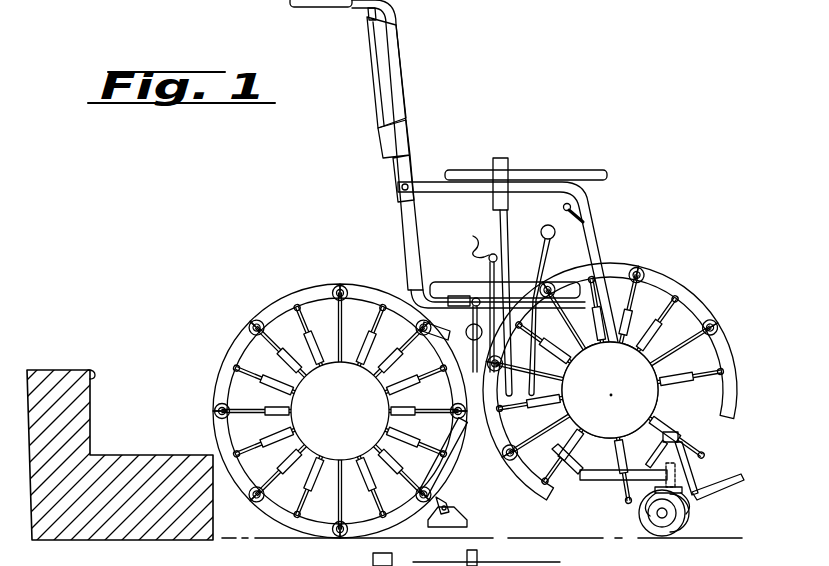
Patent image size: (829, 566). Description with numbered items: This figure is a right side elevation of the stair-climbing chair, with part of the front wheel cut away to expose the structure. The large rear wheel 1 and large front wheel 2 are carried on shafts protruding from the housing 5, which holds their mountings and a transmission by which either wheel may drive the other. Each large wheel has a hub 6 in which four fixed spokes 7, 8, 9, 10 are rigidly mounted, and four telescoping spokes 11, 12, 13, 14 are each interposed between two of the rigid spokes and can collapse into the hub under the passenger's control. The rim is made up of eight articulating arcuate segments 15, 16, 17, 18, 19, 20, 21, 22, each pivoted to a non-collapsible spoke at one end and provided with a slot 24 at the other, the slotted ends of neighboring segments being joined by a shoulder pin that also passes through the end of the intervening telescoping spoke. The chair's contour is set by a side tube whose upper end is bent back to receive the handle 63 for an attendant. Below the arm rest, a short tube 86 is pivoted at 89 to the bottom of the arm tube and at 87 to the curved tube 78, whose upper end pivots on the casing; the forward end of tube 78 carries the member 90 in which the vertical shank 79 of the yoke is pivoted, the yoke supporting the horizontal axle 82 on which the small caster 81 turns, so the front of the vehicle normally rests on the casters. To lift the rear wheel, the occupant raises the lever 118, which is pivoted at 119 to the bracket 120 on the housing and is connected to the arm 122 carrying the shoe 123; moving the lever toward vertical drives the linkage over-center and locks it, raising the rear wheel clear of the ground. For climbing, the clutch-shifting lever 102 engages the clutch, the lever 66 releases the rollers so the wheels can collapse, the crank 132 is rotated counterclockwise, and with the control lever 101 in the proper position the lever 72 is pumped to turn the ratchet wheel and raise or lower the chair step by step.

The large rear wheel 1 is at (291, 298).
The large front wheel 2 is at (710, 316).
The housing 5 is at (476, 432).
The hub 6 is at (474, 401).
The fixed spoke 7 is at (273, 344).
The fixed spoke 8 is at (281, 470).
The fixed spoke 9 is at (403, 473).
The fixed spoke 10 is at (400, 350).
The telescoping spoke 11 is at (350, 498).
The telescoping spoke 12 is at (437, 412).
The telescoping spoke 13 is at (344, 333).
The telescoping spoke 14 is at (268, 410).
The arcuate rim segment 15 is at (402, 520).
The arcuate rim segment 16 is at (310, 530).
The arcuate rim segment 17 is at (220, 438).
The arcuate rim segment 18 is at (216, 383).
The arcuate rim segment 19 is at (256, 320).
The arcuate rim segment 20 is at (363, 298).
The arcuate rim segment 21 is at (444, 334).
The arcuate rim segment 22 is at (452, 476).
The slot 24 is at (343, 285).
The handle 63 is at (327, 8).
The lever 66 is at (473, 239).
The lever 72 is at (510, 222).
The curved tube 78 is at (582, 480).
The vertical shank 79 is at (686, 466).
The small wheel or caster 81 is at (689, 518).
The horizontal axle 82 is at (657, 513).
The short tube 86 is at (660, 450).
The pivot 87 is at (650, 470).
The pivot 89 is at (680, 437).
The member 90 is at (665, 481).
The control lever 101 is at (549, 267).
The clutch-shifting lever 102 is at (467, 315).
The lever 118 is at (468, 336).
The pivot 119 is at (377, 335).
The bracket 120 is at (412, 367).
The arm 122 is at (450, 506).
The shoe 123 is at (470, 522).
The crank 132 is at (573, 210).